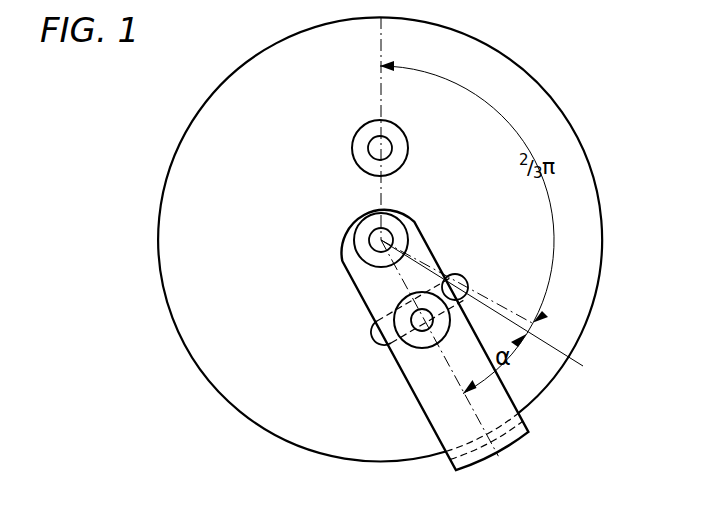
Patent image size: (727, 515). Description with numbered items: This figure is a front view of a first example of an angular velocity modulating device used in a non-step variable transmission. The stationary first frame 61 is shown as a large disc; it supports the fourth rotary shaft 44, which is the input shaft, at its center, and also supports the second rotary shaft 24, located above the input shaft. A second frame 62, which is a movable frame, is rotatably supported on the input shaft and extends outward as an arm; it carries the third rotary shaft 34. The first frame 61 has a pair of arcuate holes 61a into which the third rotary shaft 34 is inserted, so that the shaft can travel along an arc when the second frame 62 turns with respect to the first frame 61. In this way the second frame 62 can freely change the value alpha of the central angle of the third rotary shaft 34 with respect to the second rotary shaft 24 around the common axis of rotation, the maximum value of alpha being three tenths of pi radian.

The first frame 61 is at (521, 77).
The arcuate holes 61a is at (463, 291).
The second frame 62 is at (529, 431).
The second rotary shaft 24 is at (386, 143).
The fourth rotary shaft 44 is at (384, 237).
The third rotary shaft 34 is at (403, 341).